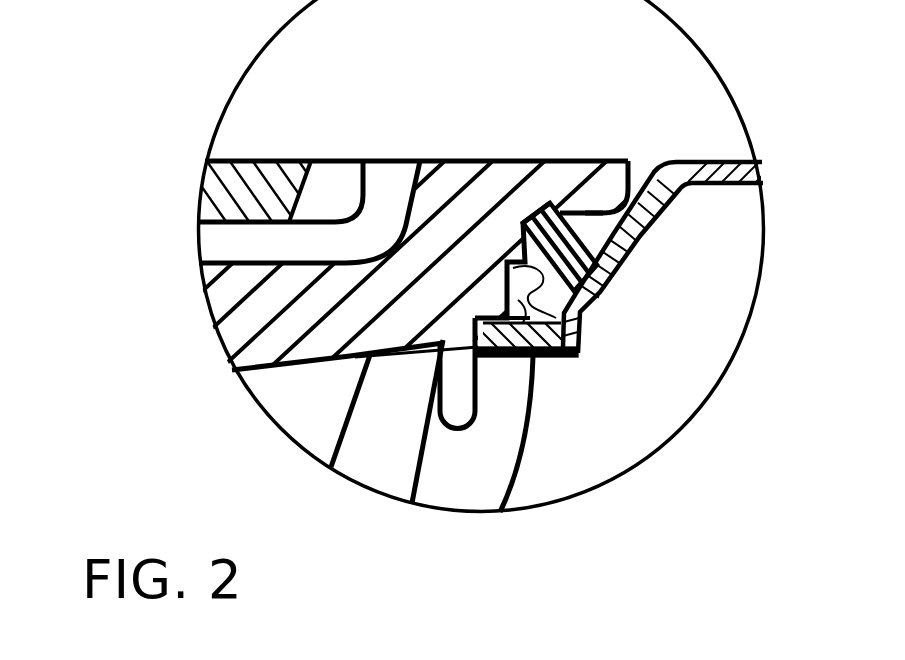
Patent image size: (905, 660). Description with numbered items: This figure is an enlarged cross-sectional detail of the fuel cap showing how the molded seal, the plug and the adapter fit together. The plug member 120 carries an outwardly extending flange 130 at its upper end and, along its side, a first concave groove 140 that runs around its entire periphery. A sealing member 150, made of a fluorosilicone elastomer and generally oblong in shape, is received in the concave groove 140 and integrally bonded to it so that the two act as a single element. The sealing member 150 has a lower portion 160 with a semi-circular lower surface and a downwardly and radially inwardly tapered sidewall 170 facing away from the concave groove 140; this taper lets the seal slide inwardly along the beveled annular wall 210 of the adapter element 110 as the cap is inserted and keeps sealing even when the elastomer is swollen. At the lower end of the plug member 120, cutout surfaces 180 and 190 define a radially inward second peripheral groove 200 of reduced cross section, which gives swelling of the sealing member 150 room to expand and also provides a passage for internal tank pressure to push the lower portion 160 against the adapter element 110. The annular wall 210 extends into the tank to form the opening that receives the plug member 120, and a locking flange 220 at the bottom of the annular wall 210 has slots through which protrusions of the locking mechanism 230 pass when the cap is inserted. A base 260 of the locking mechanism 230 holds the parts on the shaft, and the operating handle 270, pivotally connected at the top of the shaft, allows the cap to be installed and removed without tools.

The adapter element 110 is at (715, 161).
The plug member 120 is at (311, 127).
The outwardly extending flange 130 is at (587, 190).
The first concave groove 140 is at (530, 212).
The sealing member 150 is at (598, 268).
The lower portion 160 is at (556, 303).
The tapered sidewall 170 is at (632, 247).
The cutout surface 180 is at (504, 310).
The cutout surface 190 is at (503, 310).
The second peripheral groove 200 is at (566, 357).
The annular wall 210 is at (666, 207).
The locking flange 220 is at (543, 358).
The locking mechanism 230 is at (478, 488).
The base 260 is at (368, 446).
The operating handle 270 is at (279, 126).